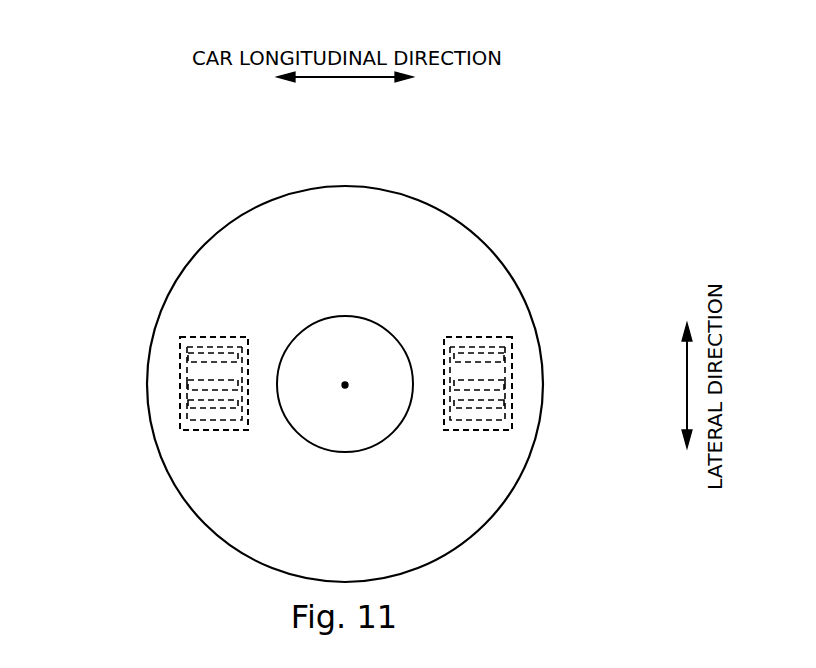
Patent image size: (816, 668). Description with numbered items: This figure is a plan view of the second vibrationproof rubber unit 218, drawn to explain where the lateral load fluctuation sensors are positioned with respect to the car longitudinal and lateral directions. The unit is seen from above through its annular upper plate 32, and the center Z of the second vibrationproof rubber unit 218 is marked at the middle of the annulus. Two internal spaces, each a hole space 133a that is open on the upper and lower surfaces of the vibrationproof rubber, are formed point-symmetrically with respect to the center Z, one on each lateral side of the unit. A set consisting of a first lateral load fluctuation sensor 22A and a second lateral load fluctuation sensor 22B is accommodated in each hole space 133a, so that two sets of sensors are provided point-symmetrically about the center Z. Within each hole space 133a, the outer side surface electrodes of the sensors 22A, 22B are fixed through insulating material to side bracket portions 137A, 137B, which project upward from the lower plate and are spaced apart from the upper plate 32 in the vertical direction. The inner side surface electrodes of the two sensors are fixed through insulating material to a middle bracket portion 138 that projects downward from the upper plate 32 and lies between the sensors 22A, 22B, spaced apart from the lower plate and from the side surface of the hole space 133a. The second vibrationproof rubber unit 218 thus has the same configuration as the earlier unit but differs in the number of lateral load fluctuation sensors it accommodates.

The second vibrationproof rubber unit 218 is at (228, 217).
The upper plate 32 is at (345, 355).
The center of the second vibrationproof rubber unit Z is at (345, 388).
The hole space 133a is at (203, 337).
The side bracket portion 137A is at (188, 355).
The first lateral load fluctuation sensor 22A is at (190, 368).
The middle bracket portion 138 is at (190, 385).
The second lateral load fluctuation sensor 22B is at (190, 398).
The side bracket portion 137B is at (188, 410).